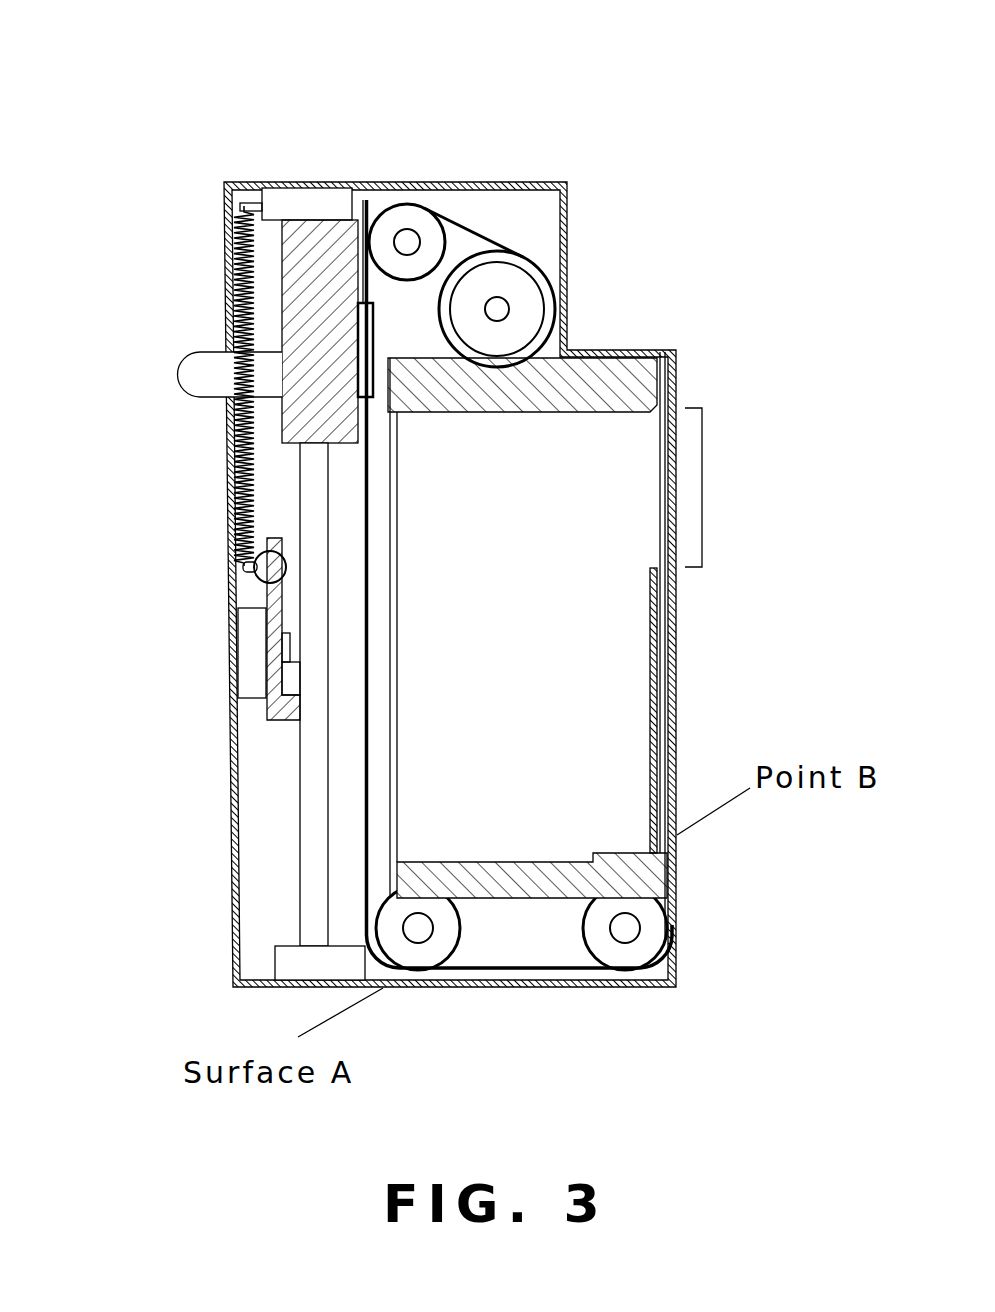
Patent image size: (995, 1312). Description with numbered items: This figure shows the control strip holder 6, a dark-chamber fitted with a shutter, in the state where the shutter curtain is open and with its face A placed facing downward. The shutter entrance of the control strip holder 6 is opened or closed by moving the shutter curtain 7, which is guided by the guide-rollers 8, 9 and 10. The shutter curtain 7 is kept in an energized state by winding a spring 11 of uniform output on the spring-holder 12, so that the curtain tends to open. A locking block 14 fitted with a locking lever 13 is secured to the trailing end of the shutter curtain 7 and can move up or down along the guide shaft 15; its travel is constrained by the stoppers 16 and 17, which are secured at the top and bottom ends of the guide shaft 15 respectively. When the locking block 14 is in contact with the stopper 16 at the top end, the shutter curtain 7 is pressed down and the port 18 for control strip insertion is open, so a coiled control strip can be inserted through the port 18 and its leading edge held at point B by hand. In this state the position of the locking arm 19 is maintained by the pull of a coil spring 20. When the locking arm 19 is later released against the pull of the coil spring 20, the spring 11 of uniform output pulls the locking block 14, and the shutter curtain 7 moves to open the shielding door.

The control strip holder 6 is at (372, 162).
The shutter curtain 7 is at (587, 987).
The guide-roller 8 is at (427, 218).
The guide-roller 9 is at (427, 960).
The guide-roller 10 is at (643, 921).
The spring of uniform output 11 is at (468, 230).
The spring-holder 12 is at (545, 272).
The locking lever 13 is at (176, 396).
The locking block 14 is at (283, 428).
The guide shaft 15 is at (313, 817).
The stopper 16 is at (277, 202).
The stopper 17 is at (287, 965).
The port for control strip insertion 18 is at (702, 472).
The locking arm 19 is at (262, 610).
The coil spring 20 is at (237, 523).